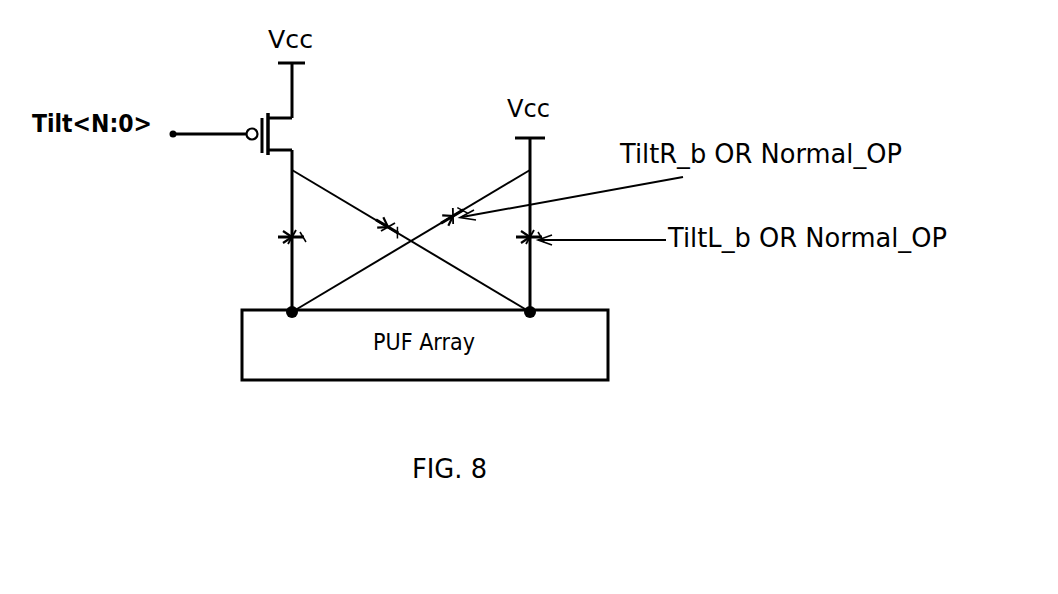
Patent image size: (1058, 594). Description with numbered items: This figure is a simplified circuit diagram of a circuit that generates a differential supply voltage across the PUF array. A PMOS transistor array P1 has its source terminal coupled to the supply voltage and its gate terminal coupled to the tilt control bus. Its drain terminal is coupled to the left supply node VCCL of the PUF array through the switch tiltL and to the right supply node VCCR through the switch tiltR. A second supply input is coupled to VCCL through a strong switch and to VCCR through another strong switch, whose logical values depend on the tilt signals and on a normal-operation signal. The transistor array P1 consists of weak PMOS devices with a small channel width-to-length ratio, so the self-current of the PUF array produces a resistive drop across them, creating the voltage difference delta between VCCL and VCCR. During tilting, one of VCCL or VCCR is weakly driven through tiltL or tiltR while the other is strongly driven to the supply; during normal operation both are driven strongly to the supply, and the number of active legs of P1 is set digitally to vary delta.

The PMOS transistor array P1 is at (335, 119).
The switch tiltL is at (258, 242).
The switch tiltR is at (394, 215).
The VccL VCCL is at (302, 330).
The VccR VCCR is at (541, 330).